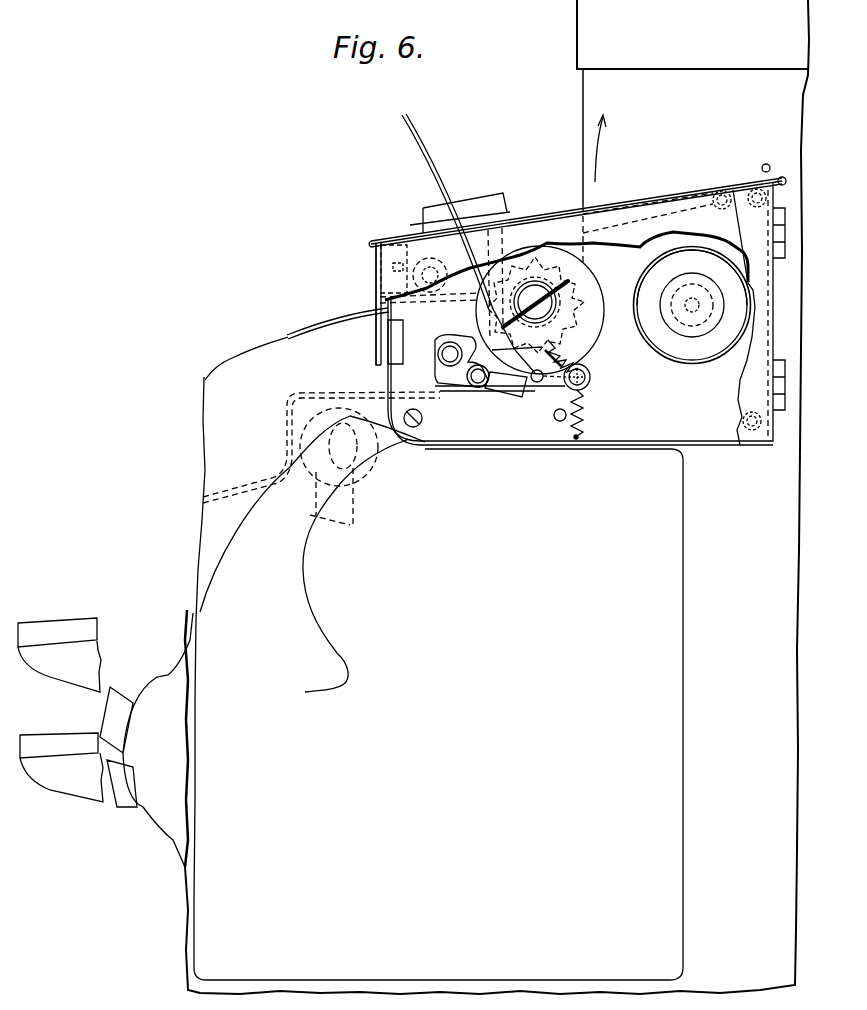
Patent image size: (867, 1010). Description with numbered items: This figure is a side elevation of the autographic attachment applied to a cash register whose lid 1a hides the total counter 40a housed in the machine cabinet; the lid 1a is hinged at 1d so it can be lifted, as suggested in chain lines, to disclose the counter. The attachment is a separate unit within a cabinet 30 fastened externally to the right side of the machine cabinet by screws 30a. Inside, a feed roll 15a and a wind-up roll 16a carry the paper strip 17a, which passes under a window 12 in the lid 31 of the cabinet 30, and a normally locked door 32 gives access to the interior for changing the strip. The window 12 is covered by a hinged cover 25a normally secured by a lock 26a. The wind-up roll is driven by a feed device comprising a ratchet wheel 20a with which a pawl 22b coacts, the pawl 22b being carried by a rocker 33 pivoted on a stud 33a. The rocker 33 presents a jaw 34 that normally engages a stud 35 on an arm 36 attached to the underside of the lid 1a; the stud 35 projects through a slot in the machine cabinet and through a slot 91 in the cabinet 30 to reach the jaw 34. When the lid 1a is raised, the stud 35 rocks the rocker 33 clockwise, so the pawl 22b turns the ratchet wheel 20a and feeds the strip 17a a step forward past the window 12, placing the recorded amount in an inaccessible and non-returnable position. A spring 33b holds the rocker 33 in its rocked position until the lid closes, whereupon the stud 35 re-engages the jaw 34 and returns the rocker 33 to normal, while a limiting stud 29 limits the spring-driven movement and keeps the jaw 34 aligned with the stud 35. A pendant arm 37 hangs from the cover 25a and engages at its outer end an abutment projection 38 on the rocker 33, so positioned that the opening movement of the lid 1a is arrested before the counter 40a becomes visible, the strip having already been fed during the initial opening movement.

The lid 1a is at (409, 125).
The hinge 1d is at (500, 352).
The window 12 is at (615, 197).
The feed roll 15a is at (710, 350).
The wind-up roll 16a is at (575, 280).
The paper strip 17a is at (743, 190).
The ratchet wheel 20a is at (592, 322).
The pawl 22b is at (592, 373).
The hinged cover 25a is at (683, 182).
The lock 26a is at (452, 202).
The limiting stud 29 is at (558, 421).
The cabinet 30 is at (748, 337).
The screws 30a is at (414, 427).
The lid of the cabinet 31 is at (398, 235).
The door 32 is at (760, 405).
The rocker 33 is at (513, 392).
The stud 33a is at (473, 387).
The spring 33b is at (583, 437).
The jaw 34 is at (443, 358).
The stud 35 is at (437, 358).
The arm 36 is at (397, 335).
The pendant arm 37 is at (503, 230).
The projection 38 is at (588, 368).
The total counter 40a is at (372, 458).
The slot 91 is at (380, 308).